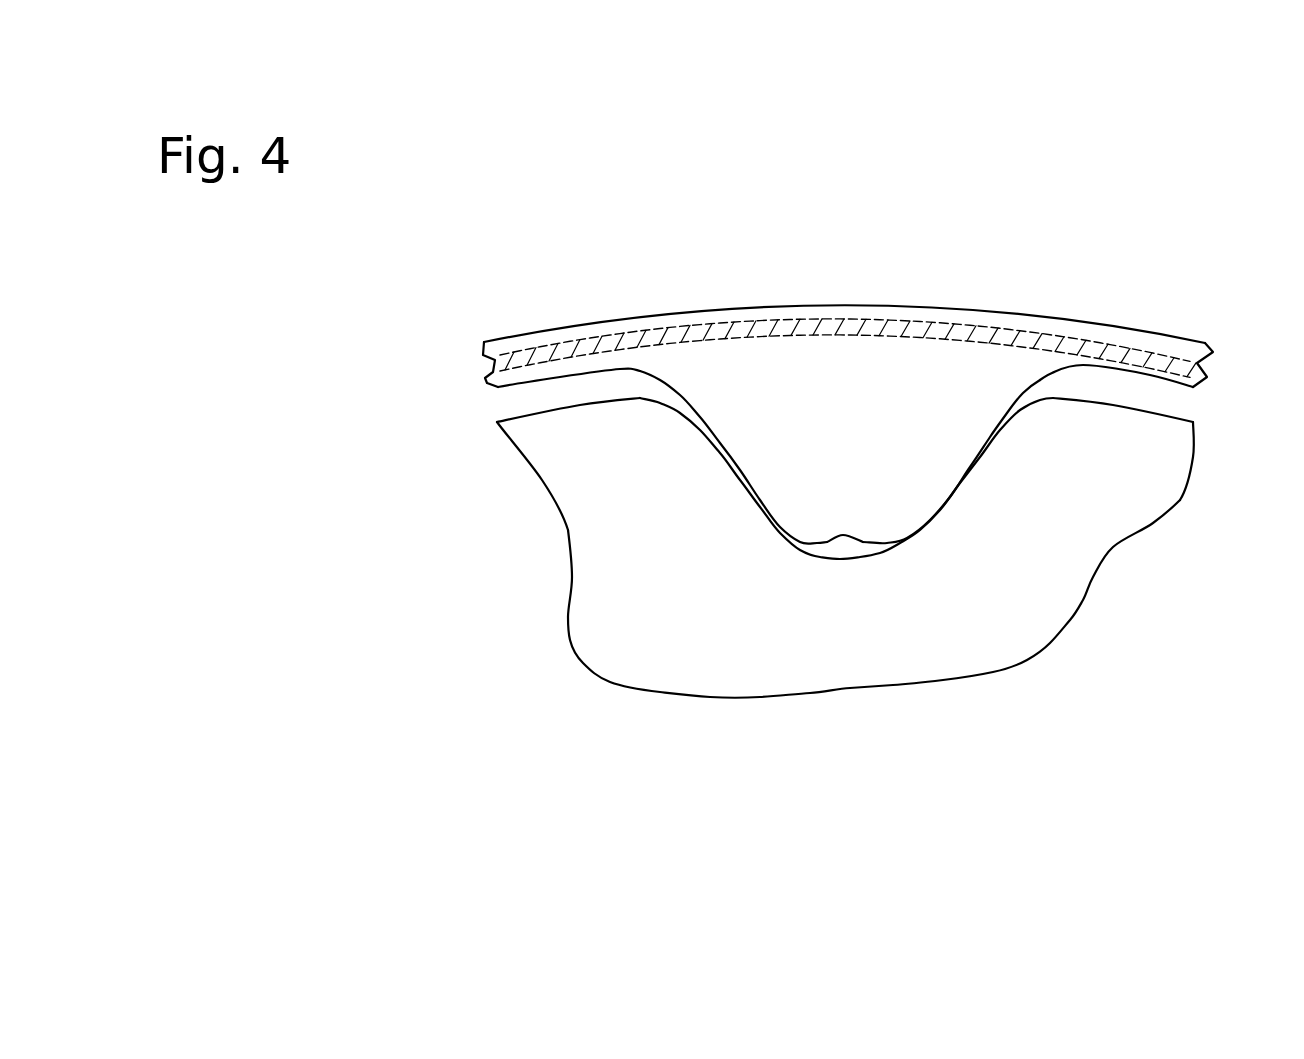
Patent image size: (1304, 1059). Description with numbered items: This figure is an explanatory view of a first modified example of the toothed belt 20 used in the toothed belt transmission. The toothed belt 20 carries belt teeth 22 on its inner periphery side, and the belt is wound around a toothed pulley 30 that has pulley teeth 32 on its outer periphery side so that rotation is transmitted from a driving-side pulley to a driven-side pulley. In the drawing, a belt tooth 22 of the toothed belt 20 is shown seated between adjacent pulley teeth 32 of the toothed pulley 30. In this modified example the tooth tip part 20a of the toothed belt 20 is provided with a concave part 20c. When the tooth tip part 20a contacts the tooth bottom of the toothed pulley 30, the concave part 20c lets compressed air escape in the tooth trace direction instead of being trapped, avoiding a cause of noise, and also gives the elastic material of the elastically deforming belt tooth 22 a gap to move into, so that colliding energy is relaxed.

The toothed belt 20 is at (806, 483).
The tooth tip part 20a is at (840, 483).
The concave part 20c is at (842, 548).
The belt tooth 22 is at (888, 480).
The toothed pulley 30 is at (836, 448).
The pulley tooth 32 is at (602, 413).